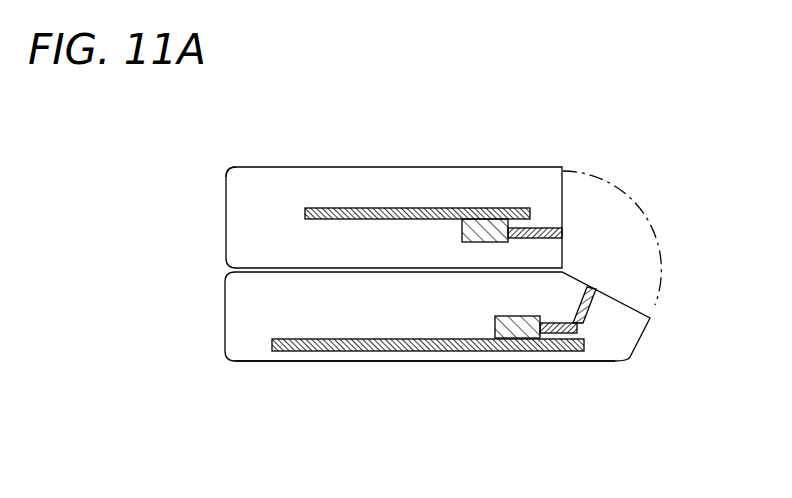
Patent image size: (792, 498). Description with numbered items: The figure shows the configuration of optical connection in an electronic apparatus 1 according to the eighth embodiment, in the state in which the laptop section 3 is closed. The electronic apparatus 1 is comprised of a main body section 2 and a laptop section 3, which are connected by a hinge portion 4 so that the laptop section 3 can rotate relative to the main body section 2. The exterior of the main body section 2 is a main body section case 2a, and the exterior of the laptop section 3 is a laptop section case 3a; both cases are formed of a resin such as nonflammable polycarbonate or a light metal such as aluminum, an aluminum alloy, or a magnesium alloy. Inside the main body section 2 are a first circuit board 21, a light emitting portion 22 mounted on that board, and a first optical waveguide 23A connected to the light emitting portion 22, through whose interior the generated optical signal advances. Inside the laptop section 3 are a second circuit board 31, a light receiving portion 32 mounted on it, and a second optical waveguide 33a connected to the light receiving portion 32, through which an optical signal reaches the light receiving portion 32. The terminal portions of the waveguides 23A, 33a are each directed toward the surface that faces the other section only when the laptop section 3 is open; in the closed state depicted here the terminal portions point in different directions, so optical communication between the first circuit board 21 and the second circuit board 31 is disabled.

The electronic apparatus 1 is at (587, 133).
The main body section 2 is at (335, 361).
The main body section case 2a is at (427, 362).
The laptop section 3 is at (561, 167).
The laptop section case 3a is at (226, 208).
The hinge portion 4 is at (617, 233).
The first circuit board 21 is at (583, 345).
The light emitting portion 22 is at (578, 323).
The first optical waveguide 23A is at (584, 297).
The second circuit board 31 is at (383, 210).
The light receiving portion 32 is at (463, 215).
The second optical waveguide 33a is at (545, 228).